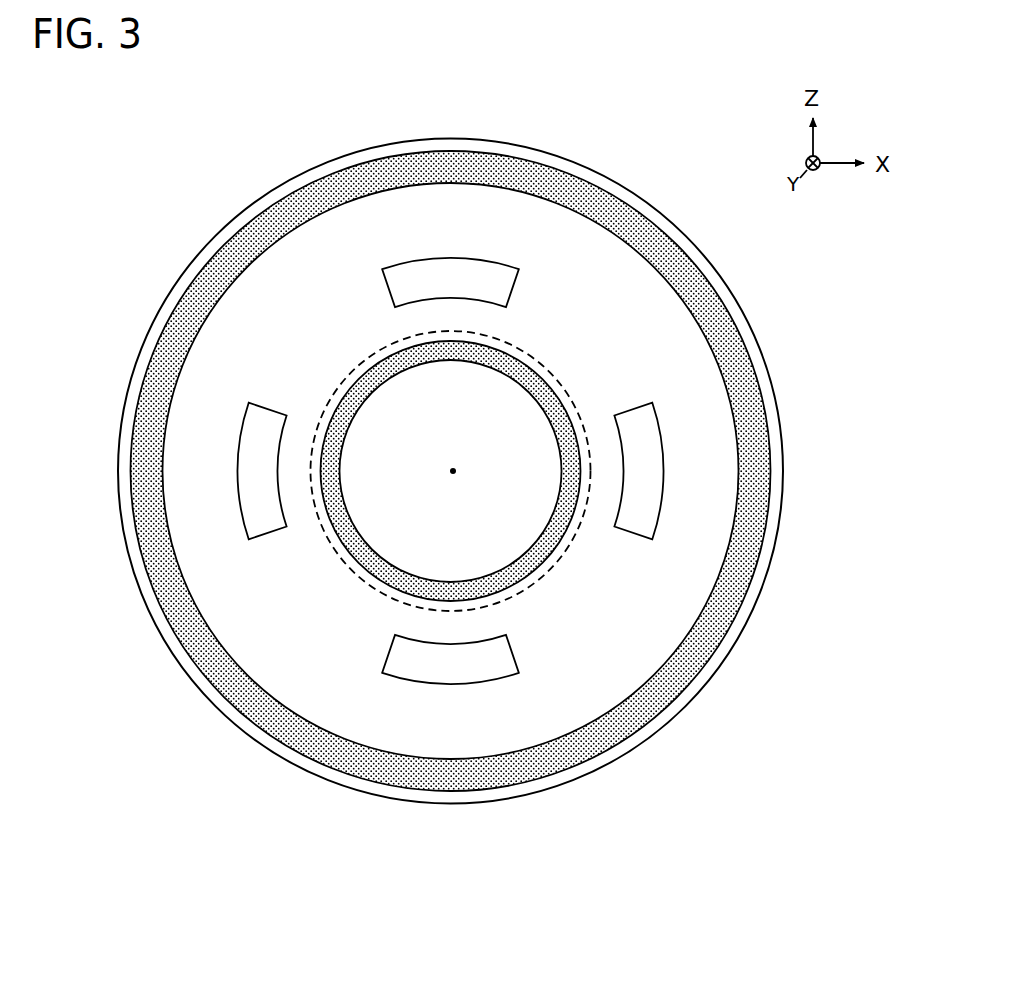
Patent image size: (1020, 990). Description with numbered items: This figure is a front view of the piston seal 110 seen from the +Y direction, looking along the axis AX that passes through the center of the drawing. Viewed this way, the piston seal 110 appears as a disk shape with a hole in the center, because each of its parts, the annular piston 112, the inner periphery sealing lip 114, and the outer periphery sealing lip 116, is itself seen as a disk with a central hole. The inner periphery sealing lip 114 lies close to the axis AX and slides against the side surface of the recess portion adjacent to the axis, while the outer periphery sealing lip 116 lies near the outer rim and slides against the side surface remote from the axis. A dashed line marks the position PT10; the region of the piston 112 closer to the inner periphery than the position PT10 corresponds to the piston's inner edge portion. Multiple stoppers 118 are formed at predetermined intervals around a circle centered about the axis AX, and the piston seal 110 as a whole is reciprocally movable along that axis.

The piston seal 110 is at (145, 165).
The piston 112 is at (187, 267).
The inner periphery sealing lip 114 is at (380, 568).
The outer periphery sealing lip 116 is at (200, 637).
The stopper 118 is at (450, 277).
The position PT10 is at (533, 580).
The axis AX is at (452, 483).